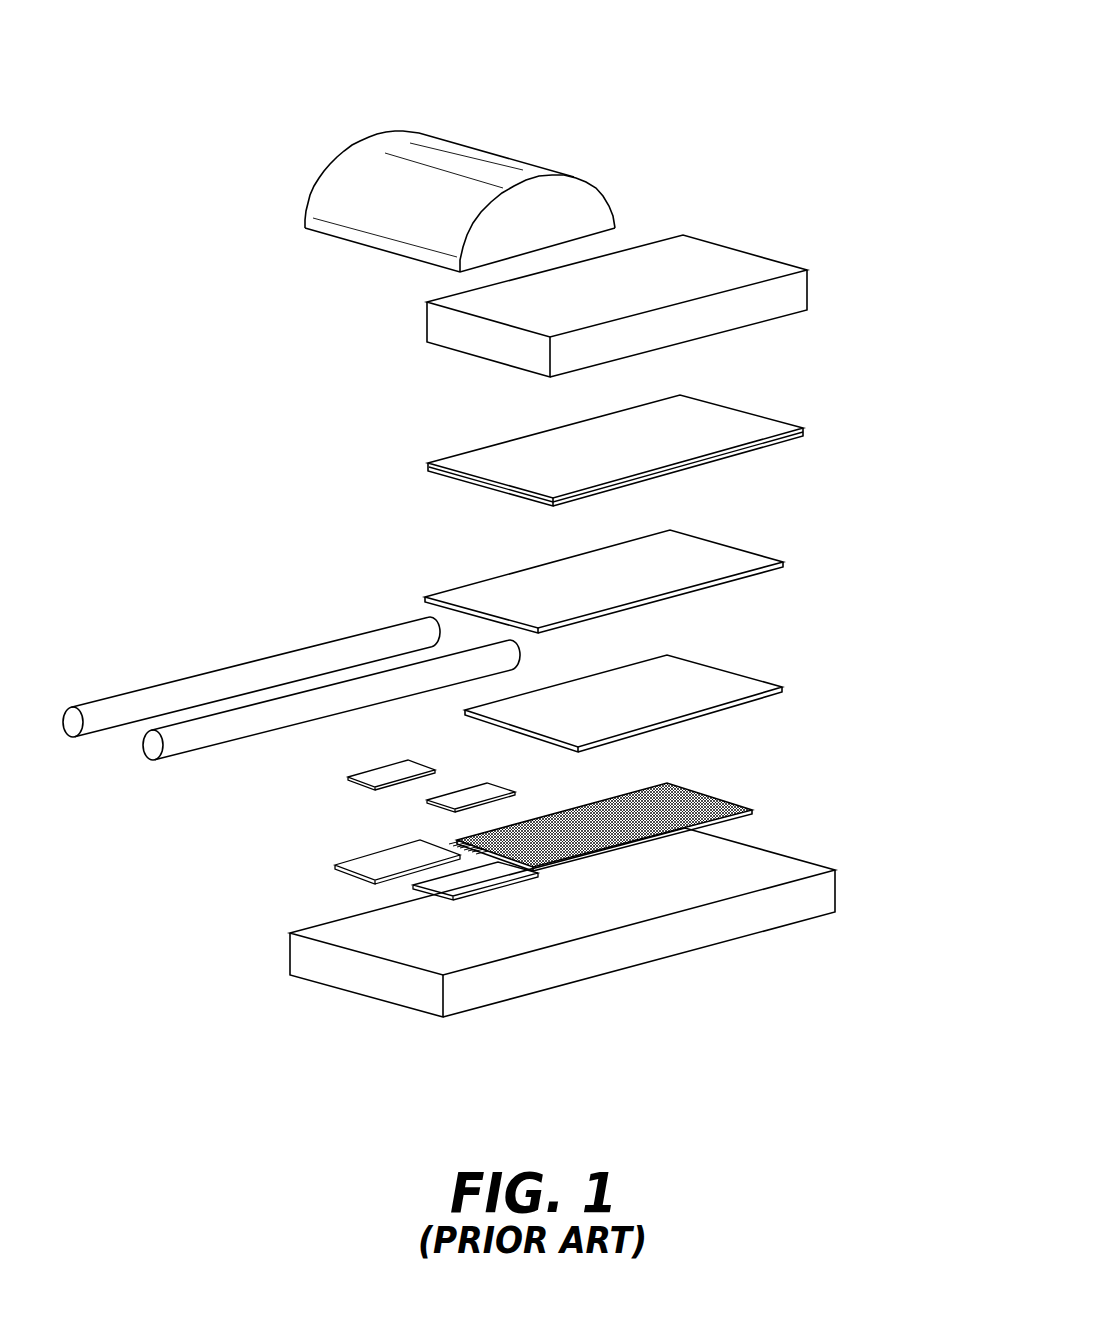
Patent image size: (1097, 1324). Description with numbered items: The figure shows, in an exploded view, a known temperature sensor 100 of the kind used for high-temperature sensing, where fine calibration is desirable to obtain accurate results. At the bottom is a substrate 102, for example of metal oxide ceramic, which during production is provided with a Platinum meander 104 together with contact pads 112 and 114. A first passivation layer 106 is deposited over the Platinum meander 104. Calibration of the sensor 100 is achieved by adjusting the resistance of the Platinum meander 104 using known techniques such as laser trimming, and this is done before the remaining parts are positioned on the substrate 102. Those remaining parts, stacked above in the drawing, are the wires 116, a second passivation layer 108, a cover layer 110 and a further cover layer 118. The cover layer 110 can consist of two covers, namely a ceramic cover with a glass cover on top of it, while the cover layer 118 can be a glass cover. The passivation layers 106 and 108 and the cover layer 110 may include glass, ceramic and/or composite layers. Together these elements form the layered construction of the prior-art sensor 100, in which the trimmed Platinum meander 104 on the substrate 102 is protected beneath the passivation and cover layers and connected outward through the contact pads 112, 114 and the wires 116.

The temperature sensor 100 is at (808, 100).
The substrate 102 is at (835, 890).
The Platinum meander 104 is at (752, 810).
The first passivation layer 106 is at (782, 687).
The second passivation layer 108 is at (783, 562).
The cover layer 110 is at (807, 285).
The contact pad 112 is at (342, 868).
The contact pad 114 is at (362, 788).
The wires 116 is at (222, 668).
The cover layer 118 is at (505, 158).